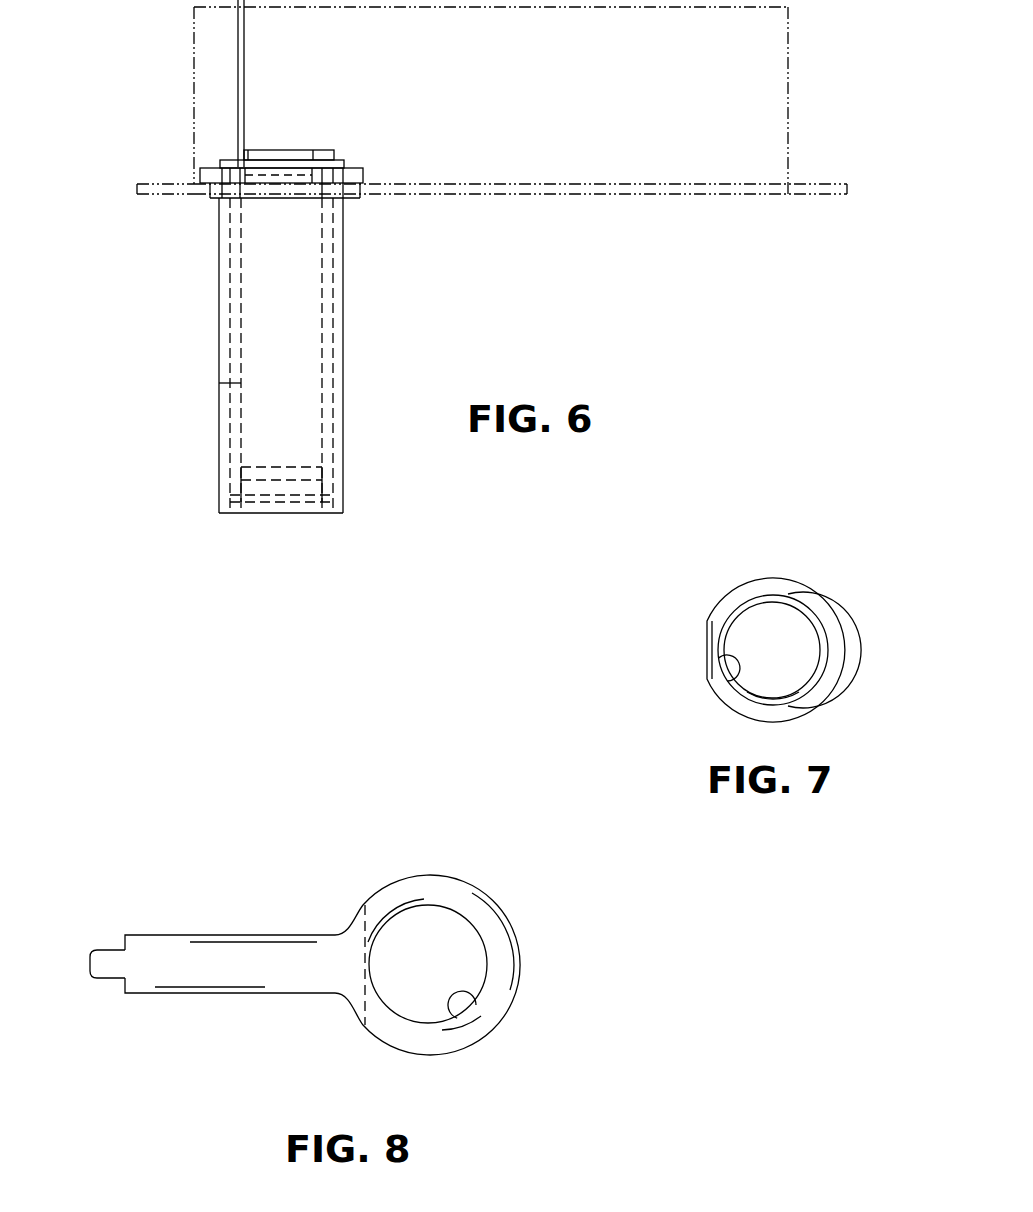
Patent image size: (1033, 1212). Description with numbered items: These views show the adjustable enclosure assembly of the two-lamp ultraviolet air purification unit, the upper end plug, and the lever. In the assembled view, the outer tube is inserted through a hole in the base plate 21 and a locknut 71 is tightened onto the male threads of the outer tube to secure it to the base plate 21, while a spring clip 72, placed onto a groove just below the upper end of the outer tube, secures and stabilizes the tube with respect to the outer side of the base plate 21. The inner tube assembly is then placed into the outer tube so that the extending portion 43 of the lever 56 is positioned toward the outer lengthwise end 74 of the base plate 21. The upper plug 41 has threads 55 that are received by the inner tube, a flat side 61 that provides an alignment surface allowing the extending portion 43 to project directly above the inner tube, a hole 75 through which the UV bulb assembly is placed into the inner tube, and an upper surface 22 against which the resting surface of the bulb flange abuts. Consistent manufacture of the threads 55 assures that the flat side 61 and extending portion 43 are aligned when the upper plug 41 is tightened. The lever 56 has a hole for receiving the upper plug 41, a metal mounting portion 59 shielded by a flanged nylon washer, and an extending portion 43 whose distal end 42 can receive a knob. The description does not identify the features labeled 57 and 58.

In FIG. 6, the base plate 21 is at (544, 194).
In FIG. 6, the outer lengthwise end 74 is at (167, 183).
In FIG. 6, the locknut 71 is at (365, 175).
In FIG. 6, the spring clip 72 is at (212, 197).
In FIG. 7, the upper plug 41 is at (774, 578).
In FIG. 7, the flat side 61 is at (705, 620).
In FIG. 7, the upper surface 22 is at (817, 625).
In FIG. 7, the threads 55 is at (828, 665).
In FIG. 7, the hole 75 is at (733, 655).
In FIG. 8, the lever 56 is at (432, 875).
In FIG. 8, the hidden edge 57 is at (365, 900).
In FIG. 8, the distal end 42 is at (113, 950).
In FIG. 8, the extending portion 43 is at (228, 993).
In FIG. 8, the mounting portion 59 is at (498, 940).
In FIG. 8, the notch 58 is at (453, 993).